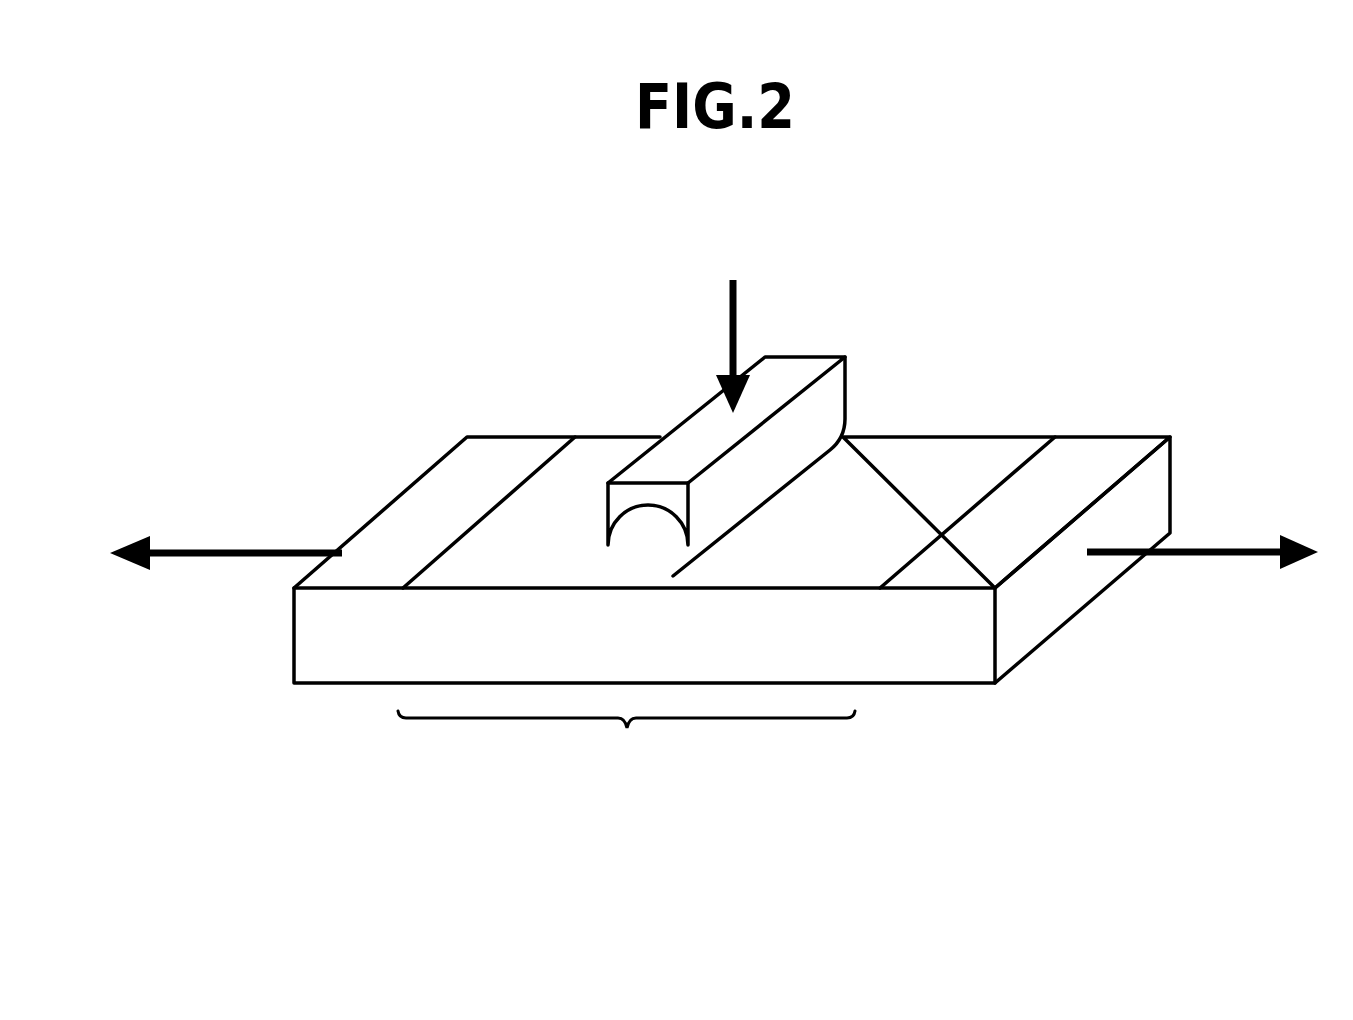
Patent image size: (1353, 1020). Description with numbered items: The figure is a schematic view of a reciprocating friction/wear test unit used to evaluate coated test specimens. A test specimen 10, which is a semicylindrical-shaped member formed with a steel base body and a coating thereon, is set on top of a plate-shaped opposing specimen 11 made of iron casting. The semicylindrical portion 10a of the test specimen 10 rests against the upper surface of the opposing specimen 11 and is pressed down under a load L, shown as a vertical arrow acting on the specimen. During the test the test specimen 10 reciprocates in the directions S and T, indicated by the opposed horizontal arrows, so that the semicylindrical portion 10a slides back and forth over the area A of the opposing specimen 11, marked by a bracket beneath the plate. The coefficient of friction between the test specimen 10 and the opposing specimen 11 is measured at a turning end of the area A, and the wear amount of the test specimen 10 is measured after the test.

The test specimen 10 is at (700, 425).
The semicylindrical portion 10a is at (783, 492).
The opposing specimen 11 is at (1097, 450).
The reciprocating direction S is at (224, 552).
The reciprocating direction T is at (1233, 550).
The load L is at (738, 321).
The area A is at (626, 748).